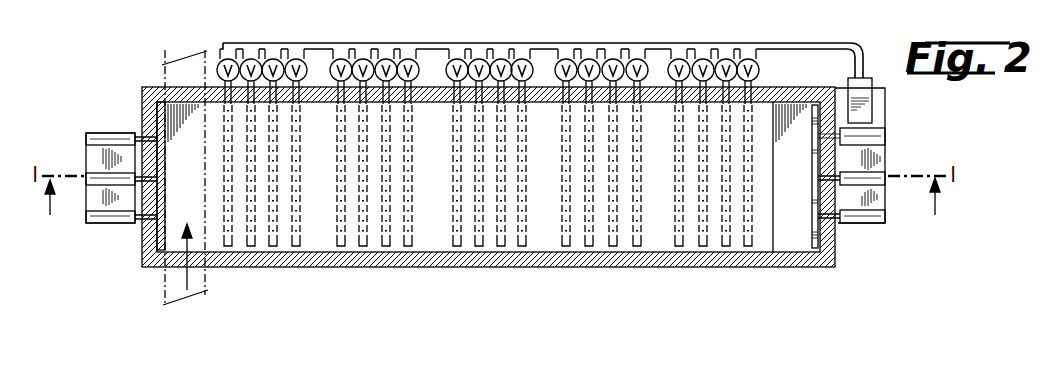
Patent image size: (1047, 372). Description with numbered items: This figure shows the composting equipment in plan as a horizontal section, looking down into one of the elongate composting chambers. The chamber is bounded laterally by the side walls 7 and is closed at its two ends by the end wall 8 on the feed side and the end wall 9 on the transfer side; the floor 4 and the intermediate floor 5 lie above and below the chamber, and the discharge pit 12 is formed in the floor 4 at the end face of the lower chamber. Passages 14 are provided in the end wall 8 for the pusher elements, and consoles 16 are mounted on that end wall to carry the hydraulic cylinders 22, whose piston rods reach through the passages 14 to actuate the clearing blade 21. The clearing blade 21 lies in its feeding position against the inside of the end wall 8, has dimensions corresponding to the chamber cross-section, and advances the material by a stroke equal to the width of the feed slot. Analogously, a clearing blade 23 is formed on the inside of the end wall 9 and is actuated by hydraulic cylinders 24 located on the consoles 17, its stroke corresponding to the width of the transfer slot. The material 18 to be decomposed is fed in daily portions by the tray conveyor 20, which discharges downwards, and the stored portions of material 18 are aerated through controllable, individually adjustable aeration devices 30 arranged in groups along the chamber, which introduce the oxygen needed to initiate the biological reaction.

The floor 4 is at (788, 237).
The intermediate floor 5 is at (440, 185).
The side walls 7 is at (549, 96).
The end wall on the feed side 8 is at (143, 255).
The end wall on the transfer side 9 is at (838, 237).
The discharge pit 12 is at (152, 5).
The passages 14 is at (142, 126).
The consoles 16 is at (92, 200).
The consoles 17 is at (888, 201).
The material to be decomposed 18 is at (185, 283).
The tray conveyor 20 is at (167, 53).
The clearing blade 21 is at (166, 168).
The hydraulic cylinders 22 is at (86, 136).
The clearing blade 23 is at (815, 173).
The hydraulic cylinders 24 is at (887, 139).
The aeration devices 30 is at (406, 50).